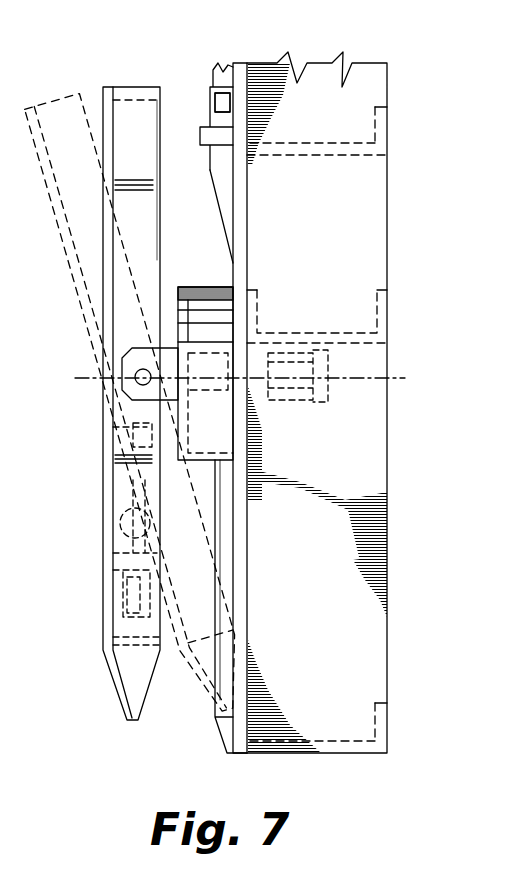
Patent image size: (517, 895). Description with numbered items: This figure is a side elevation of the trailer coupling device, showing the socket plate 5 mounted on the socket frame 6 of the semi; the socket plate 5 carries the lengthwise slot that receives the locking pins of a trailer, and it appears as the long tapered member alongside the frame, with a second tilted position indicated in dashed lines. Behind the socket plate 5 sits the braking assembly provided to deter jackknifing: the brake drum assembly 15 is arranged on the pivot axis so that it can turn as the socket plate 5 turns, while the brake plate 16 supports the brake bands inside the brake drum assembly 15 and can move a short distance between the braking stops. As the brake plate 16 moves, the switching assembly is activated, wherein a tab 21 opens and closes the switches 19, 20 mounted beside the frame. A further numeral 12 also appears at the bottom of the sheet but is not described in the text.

The blade 5 is at (115, 687).
The housing body 6 is at (310, 755).
The base 12 is at (72, 886).
The gear block 15 is at (205, 287).
The bracket arm 16 is at (227, 188).
The stop pin 19 is at (213, 97).
The stop pin 20 is at (195, 61).
The bracket 21 is at (222, 67).